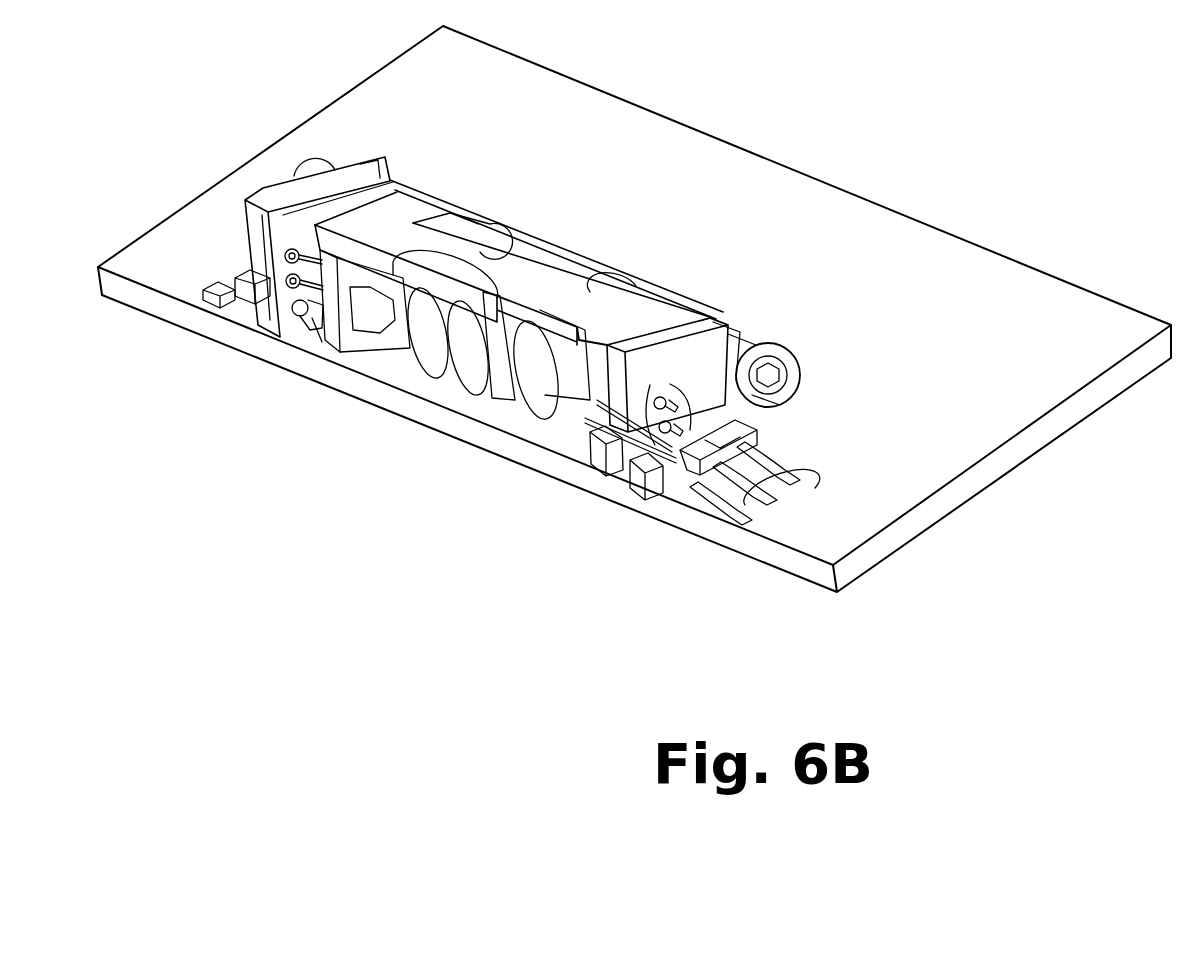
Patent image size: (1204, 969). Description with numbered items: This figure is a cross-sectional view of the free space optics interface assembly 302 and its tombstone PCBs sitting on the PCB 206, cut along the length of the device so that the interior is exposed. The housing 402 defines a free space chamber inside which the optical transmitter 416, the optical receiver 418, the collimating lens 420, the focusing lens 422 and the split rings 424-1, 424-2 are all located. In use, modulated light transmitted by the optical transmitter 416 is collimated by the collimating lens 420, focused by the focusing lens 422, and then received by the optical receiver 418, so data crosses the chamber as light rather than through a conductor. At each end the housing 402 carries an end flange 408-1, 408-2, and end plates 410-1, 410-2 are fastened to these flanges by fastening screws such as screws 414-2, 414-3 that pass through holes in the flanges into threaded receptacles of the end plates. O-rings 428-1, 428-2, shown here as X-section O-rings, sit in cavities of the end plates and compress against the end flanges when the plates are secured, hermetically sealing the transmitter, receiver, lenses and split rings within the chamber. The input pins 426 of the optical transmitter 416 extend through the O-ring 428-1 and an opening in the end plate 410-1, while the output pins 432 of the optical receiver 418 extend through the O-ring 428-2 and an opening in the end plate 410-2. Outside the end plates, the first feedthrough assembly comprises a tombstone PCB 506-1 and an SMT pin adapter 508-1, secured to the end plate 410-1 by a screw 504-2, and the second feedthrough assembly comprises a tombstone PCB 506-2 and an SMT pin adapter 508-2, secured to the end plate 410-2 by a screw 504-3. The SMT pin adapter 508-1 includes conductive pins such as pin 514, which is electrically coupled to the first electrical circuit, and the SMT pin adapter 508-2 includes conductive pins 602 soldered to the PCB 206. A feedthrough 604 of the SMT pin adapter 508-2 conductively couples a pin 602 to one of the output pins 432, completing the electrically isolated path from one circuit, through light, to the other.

The PCB 206 is at (805, 572).
The free space optics interface assembly 302 is at (540, 272).
The housing 402 is at (565, 290).
The end flange 408-1 is at (468, 197).
The end flange 408-2 is at (653, 293).
The end plate 410-1 is at (396, 184).
The end plate 410-2 is at (723, 327).
The fastening screw 414-2 is at (490, 230).
The fastening screw 414-3 is at (612, 278).
The optical transmitter 416 is at (335, 335).
The optical receiver 418 is at (570, 423).
The collimating lens 420 is at (433, 362).
The focusing lens 422 is at (483, 383).
The split ring 424-1 is at (407, 347).
The split ring 424-2 is at (520, 400).
The input pins 426 is at (303, 293).
The O-ring 428-1 is at (323, 310).
The O-ring 428-2 is at (600, 465).
The output pins 432 is at (668, 397).
The screw 504-2 is at (328, 162).
The screw 504-3 is at (780, 340).
The tombstone PCB 506-1 is at (372, 184).
The tombstone PCB 506-2 is at (735, 332).
The SMT pin adapter 508-1 is at (250, 272).
The SMT pin adapter 508-2 is at (757, 437).
The pin 514 is at (213, 287).
The conductive pins 602 is at (815, 489).
The feedthrough 604 is at (647, 490).